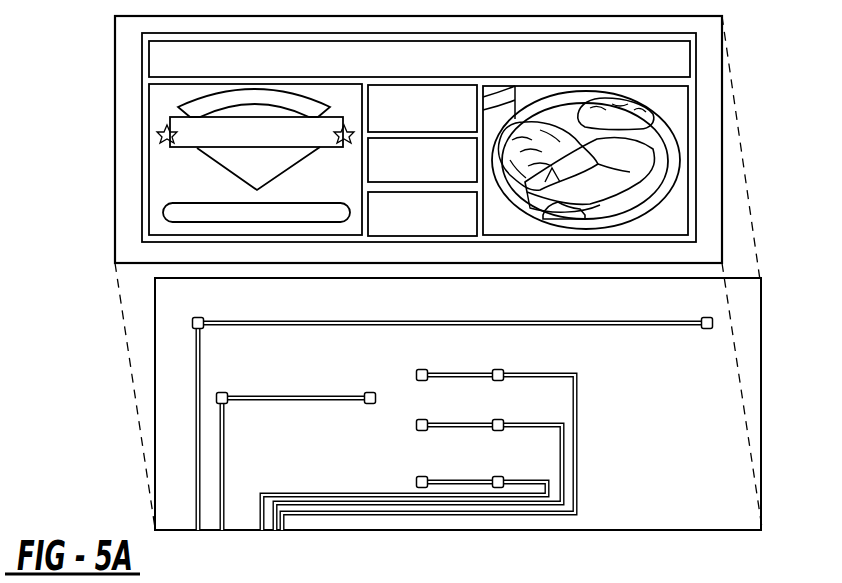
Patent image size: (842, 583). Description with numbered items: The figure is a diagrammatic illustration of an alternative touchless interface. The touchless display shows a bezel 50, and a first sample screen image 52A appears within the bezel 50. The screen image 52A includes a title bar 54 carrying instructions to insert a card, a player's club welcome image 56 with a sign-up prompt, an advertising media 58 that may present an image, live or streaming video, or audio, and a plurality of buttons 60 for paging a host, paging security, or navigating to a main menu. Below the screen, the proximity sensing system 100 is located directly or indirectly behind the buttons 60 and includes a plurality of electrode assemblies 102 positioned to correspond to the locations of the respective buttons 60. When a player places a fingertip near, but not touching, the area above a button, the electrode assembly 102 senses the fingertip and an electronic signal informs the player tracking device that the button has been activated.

The bezel 50 is at (708, 83).
The first sample screen image 52A is at (573, 267).
The title bar 54 is at (153, 63).
The player's club welcome image 56 is at (187, 175).
The advertising media 58 is at (657, 195).
The buttons 60 is at (428, 252).
The proximity sensing system 100 is at (113, 393).
The electrode assemblies 102 is at (500, 372).